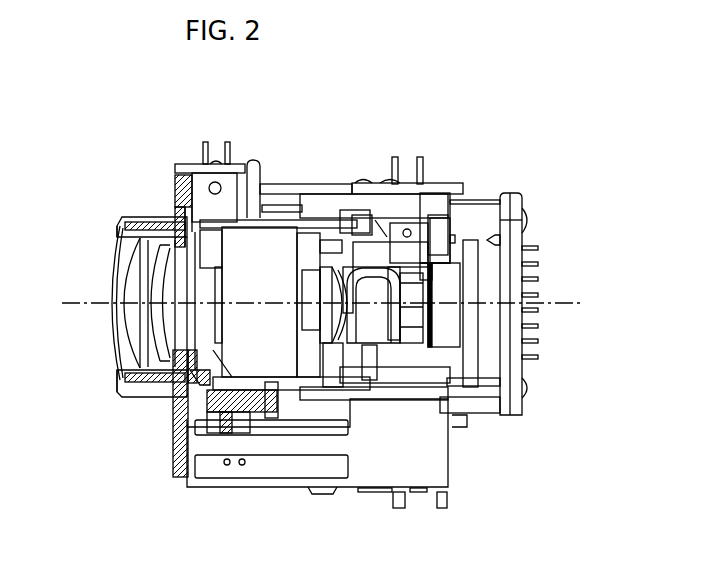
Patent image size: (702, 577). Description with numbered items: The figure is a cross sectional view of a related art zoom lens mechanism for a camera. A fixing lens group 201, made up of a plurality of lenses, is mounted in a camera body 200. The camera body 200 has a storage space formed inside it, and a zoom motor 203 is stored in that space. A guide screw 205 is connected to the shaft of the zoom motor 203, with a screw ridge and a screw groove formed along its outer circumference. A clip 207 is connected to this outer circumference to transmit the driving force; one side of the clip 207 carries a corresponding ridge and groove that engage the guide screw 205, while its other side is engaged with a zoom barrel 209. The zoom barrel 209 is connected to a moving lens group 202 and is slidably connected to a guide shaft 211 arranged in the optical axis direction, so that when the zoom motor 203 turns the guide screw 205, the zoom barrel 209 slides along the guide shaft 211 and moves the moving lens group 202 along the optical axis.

The camera body 200 is at (370, 168).
The fixing lens group 201 is at (140, 278).
The moving lens group 202 is at (155, 242).
The zoom motor 203 is at (368, 477).
The guide screw 205 is at (268, 448).
The clip 207 is at (195, 422).
The zoom barrel 209 is at (172, 397).
The guide shaft 211 is at (315, 223).